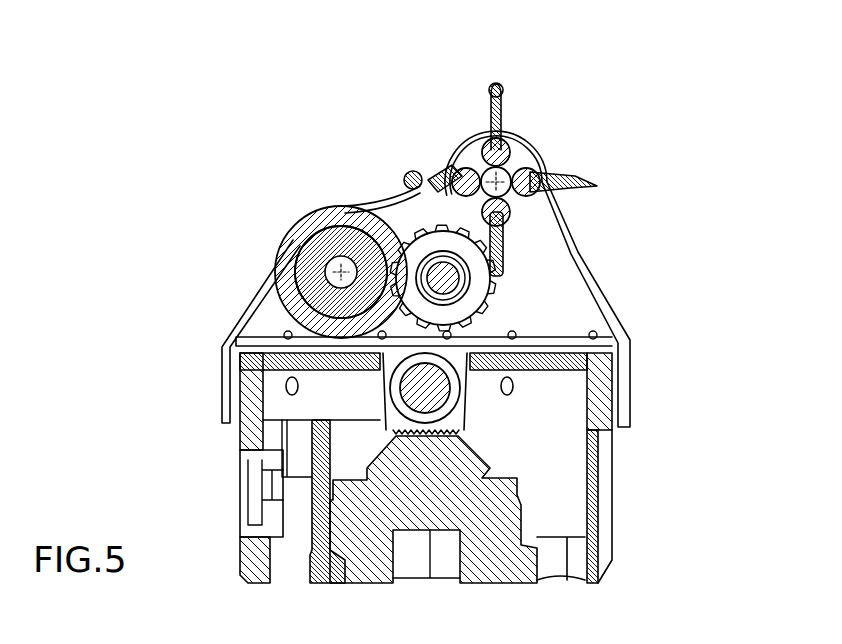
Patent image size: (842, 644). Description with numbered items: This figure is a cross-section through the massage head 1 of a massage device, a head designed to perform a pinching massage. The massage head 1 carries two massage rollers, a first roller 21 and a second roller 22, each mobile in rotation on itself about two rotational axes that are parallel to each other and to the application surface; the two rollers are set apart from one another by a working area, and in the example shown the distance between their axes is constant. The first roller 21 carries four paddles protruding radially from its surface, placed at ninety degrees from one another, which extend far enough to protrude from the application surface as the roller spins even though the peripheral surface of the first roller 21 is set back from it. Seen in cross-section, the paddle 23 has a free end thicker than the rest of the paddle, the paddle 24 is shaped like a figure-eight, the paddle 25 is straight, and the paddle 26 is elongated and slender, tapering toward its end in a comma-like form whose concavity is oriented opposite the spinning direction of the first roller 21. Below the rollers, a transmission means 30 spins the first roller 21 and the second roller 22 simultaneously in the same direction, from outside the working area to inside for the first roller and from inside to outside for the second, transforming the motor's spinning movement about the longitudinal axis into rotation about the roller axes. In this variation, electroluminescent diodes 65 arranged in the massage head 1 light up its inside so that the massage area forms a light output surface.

The massage head 1 is at (690, 487).
The first roller 21 is at (520, 142).
The second roller 22 is at (338, 250).
The paddle 23 is at (499, 86).
The paddle 24 is at (407, 170).
The paddle 25 is at (507, 233).
The paddle 26 is at (558, 176).
The transmission means 30 is at (582, 446).
The electroluminescent diodes 65 is at (288, 336).